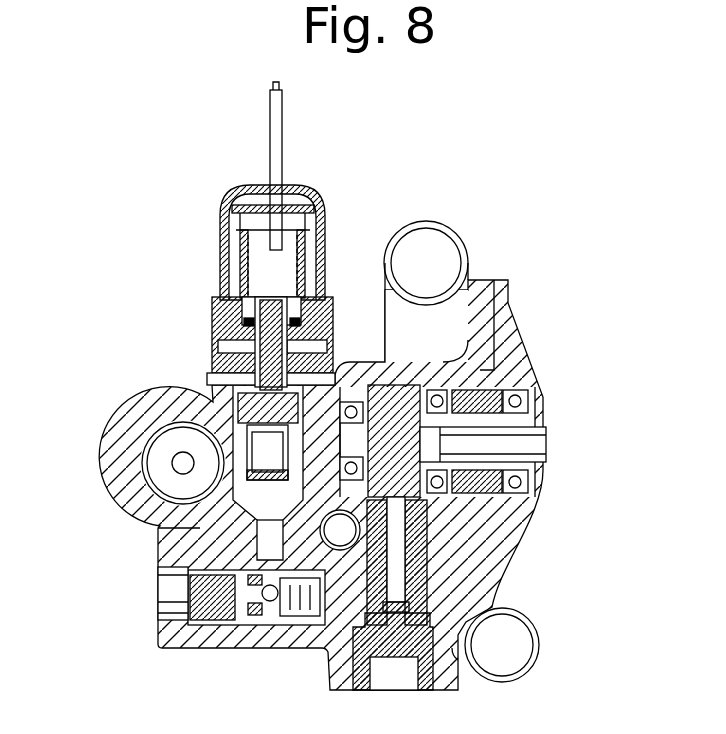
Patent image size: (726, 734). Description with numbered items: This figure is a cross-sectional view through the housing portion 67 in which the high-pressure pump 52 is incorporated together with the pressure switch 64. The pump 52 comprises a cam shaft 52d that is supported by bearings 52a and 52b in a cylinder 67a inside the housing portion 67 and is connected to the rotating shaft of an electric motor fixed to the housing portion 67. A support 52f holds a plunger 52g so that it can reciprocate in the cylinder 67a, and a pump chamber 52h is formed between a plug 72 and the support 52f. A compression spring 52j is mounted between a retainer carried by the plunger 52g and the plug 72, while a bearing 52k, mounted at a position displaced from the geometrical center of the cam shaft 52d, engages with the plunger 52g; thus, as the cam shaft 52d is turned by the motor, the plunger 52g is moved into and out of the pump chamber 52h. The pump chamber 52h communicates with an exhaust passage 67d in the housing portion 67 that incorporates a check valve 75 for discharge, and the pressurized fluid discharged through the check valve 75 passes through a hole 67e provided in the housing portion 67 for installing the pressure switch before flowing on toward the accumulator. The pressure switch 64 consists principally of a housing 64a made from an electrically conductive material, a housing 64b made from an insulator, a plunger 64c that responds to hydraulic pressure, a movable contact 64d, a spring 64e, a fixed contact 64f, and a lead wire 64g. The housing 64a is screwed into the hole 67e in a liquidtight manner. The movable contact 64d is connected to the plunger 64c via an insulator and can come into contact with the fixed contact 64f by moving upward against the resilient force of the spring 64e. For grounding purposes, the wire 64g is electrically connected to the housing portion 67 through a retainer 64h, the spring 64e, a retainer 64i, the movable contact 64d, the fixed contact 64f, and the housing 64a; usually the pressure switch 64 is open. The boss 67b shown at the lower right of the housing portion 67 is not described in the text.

The high-pressure pump 52 is at (483, 413).
The bearing 52a is at (470, 340).
The bearing 52b is at (355, 380).
The cam shaft 52d is at (430, 445).
The support 52f is at (418, 567).
The plunger 52g is at (430, 580).
The pump chamber 52h is at (463, 653).
The compression spring 52j is at (412, 598).
The bearing 52k is at (420, 370).
The pressure switch 64 is at (248, 281).
The housing 64a is at (215, 330).
The housing 64b is at (225, 283).
The plunger 64c is at (240, 407).
The movable contact 64d is at (273, 320).
The spring 64e is at (322, 232).
The fixed contact 64f is at (232, 357).
The lead wire 64g is at (282, 108).
The retainer 64h is at (228, 203).
The retainer 64i is at (262, 310).
The housing portion 67 is at (340, 450).
The cylinder 67a is at (410, 380).
The outlet pipe boss 67b is at (480, 626).
The exhaust passage 67d is at (278, 610).
The hole 67e is at (158, 528).
The plug 72 is at (420, 637).
The check valve 75 is at (235, 600).